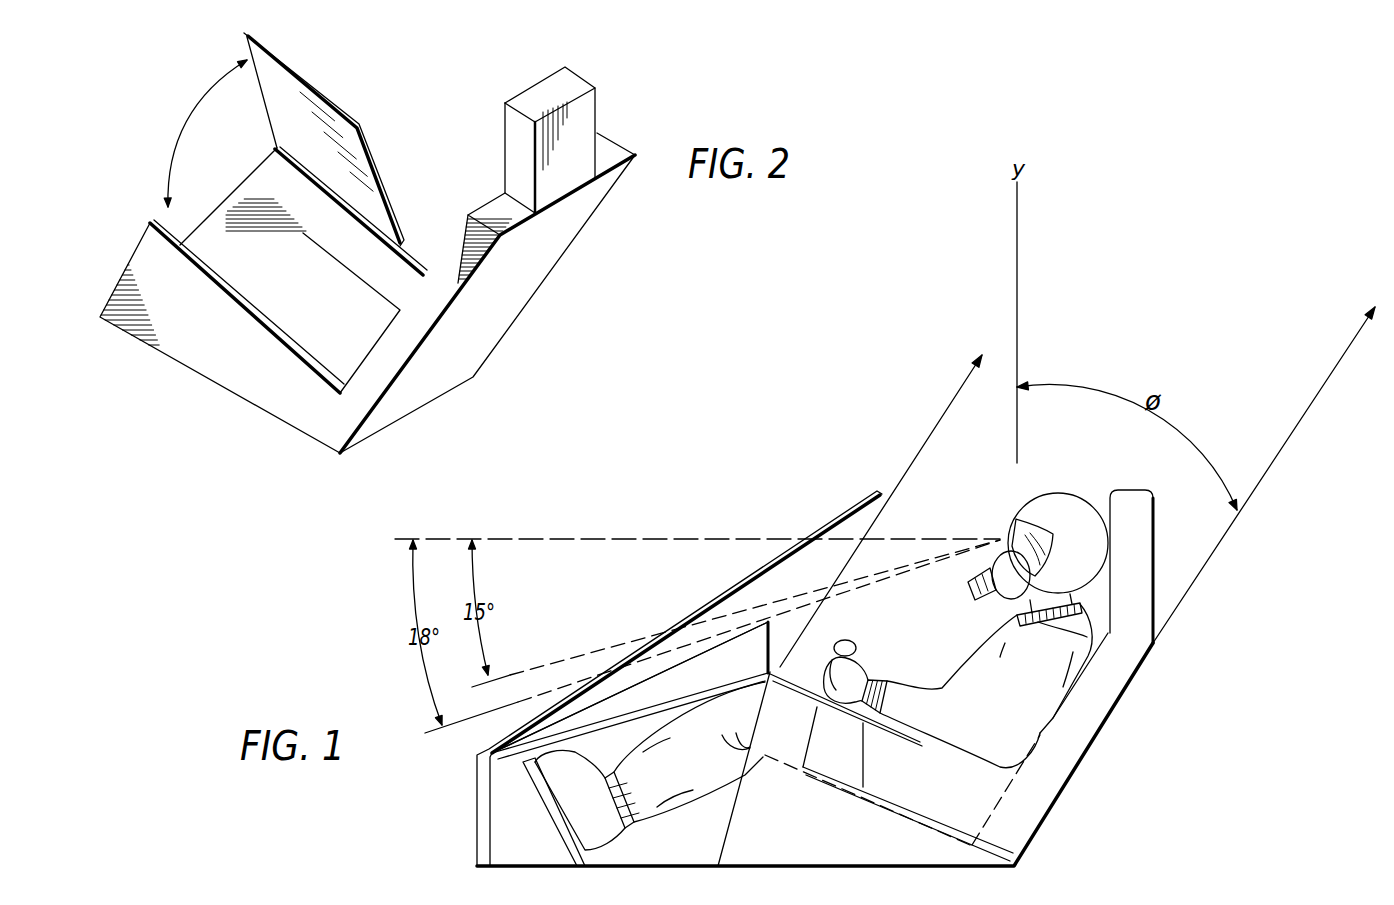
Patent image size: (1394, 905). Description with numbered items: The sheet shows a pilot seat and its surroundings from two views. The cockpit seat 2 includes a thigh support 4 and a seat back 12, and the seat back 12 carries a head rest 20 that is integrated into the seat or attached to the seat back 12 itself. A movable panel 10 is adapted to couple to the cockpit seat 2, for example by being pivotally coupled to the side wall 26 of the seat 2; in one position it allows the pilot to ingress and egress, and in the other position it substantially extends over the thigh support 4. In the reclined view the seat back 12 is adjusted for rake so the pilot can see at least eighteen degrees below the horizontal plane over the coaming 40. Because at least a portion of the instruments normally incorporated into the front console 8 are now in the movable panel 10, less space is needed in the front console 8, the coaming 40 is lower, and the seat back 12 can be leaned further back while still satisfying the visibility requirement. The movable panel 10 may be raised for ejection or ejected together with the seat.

In FIG. 2, the cockpit seat 2 is at (395, 82).
In FIG. 2, the thigh support 4 is at (303, 323).
In FIG. 1, the front console 8 is at (770, 638).
In FIG. 2, the movable panel 10 is at (380, 140).
In FIG. 2, the seat back 12 is at (528, 276).
In FIG. 2, the head rest 20 is at (585, 115).
In FIG. 2, the side wall 26 is at (422, 268).
In FIG. 1, the coaming 40 is at (768, 623).